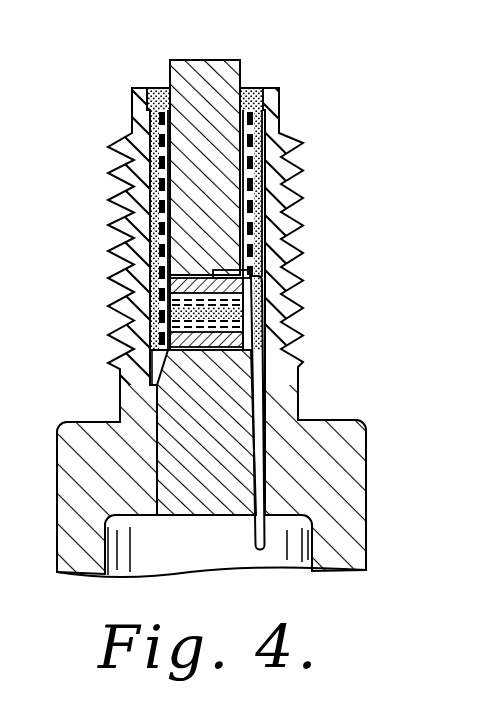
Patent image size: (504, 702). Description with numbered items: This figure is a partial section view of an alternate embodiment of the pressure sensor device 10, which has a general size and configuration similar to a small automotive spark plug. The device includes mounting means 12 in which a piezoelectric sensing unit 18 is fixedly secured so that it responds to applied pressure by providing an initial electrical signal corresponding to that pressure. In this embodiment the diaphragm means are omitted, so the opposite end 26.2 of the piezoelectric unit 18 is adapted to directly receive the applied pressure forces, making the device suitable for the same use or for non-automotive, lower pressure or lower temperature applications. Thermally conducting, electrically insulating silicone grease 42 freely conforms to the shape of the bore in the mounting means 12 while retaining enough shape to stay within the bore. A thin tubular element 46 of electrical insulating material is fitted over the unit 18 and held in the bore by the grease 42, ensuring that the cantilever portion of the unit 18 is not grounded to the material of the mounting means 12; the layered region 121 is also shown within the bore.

The pressure sensor device 10 is at (330, 212).
The mounting means 12 is at (287, 281).
The piezoelectric sensing unit 18 is at (234, 90).
The opposite end of the piezoelectric unit 26.2 is at (207, 60).
The silicone grease 42 is at (155, 97).
The thin tubular element 46 is at (148, 212).
The layered seal stack 121 is at (148, 291).